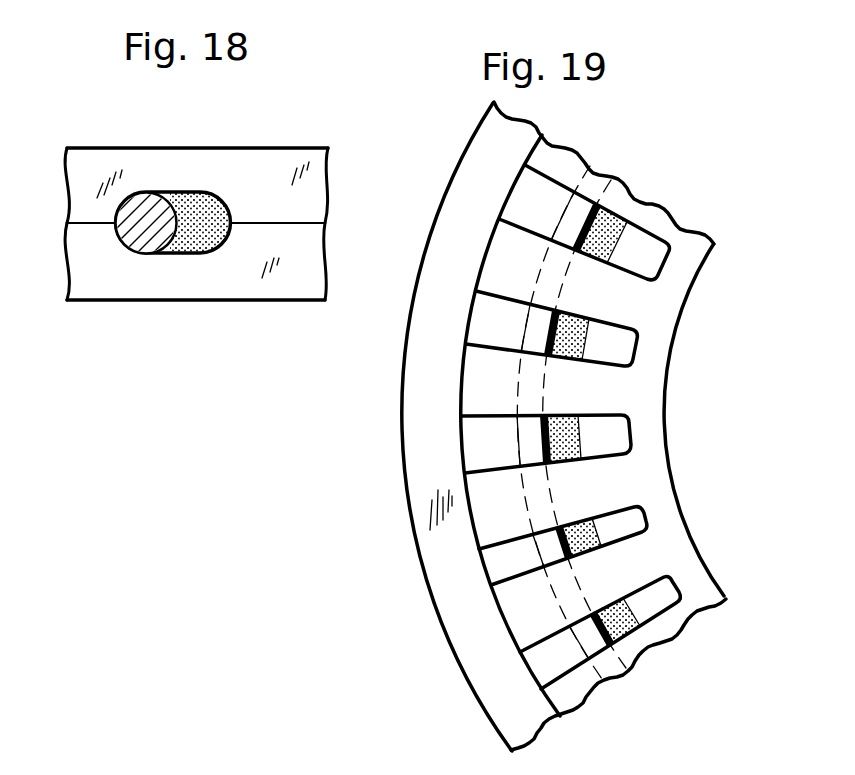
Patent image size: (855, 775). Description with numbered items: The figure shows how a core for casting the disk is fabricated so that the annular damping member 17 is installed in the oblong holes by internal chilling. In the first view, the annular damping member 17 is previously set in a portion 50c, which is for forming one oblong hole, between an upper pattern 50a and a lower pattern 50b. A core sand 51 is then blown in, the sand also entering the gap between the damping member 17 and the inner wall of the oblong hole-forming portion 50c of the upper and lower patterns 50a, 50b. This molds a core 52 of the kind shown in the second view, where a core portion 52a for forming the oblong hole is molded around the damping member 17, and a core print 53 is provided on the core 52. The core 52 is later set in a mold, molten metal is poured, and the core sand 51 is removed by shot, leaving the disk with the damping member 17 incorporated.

In FIG. 18, the annular damping member 17 is at (138, 227).
In FIG. 19, the annular damping member 17 is at (552, 550).
In FIG. 18, the upper pattern 50a is at (245, 160).
In FIG. 18, the lower pattern 50b is at (233, 280).
In FIG. 18, the oblong hole-forming portion 50c is at (189, 207).
In FIG. 18, the core sand 51 is at (182, 243).
In FIG. 19, the core sand 51 is at (482, 485).
In FIG. 19, the core 52 is at (690, 318).
In FIG. 19, the core portion 52a is at (563, 443).
In FIG. 19, the core print 53 is at (455, 222).